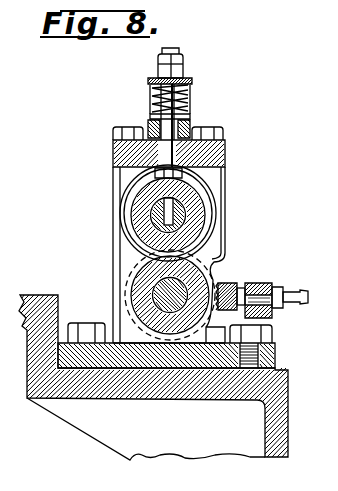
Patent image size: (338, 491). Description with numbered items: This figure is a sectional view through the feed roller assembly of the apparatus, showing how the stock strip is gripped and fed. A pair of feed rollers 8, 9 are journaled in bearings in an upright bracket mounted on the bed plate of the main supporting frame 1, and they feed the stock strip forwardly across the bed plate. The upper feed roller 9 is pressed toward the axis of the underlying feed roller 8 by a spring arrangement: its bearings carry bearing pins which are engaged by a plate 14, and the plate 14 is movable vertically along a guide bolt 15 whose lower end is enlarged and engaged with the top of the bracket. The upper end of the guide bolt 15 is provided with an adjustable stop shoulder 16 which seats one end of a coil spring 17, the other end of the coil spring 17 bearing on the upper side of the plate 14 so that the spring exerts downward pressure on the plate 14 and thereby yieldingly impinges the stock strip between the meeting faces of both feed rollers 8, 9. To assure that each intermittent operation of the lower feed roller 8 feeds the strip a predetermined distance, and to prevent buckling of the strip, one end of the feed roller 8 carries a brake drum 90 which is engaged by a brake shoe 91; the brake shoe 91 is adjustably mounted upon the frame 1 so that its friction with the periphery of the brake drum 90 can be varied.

The main supporting frame 1 is at (284, 412).
The feed roller 8 is at (160, 296).
The feed roller 9 is at (188, 214).
The plate 14 is at (190, 130).
The guide bolt 15 is at (163, 136).
The adjustable stop shoulder 16 is at (186, 84).
The coil spring 17 is at (186, 104).
The brake drum 90 is at (220, 282).
The brake shoe 91 is at (242, 288).